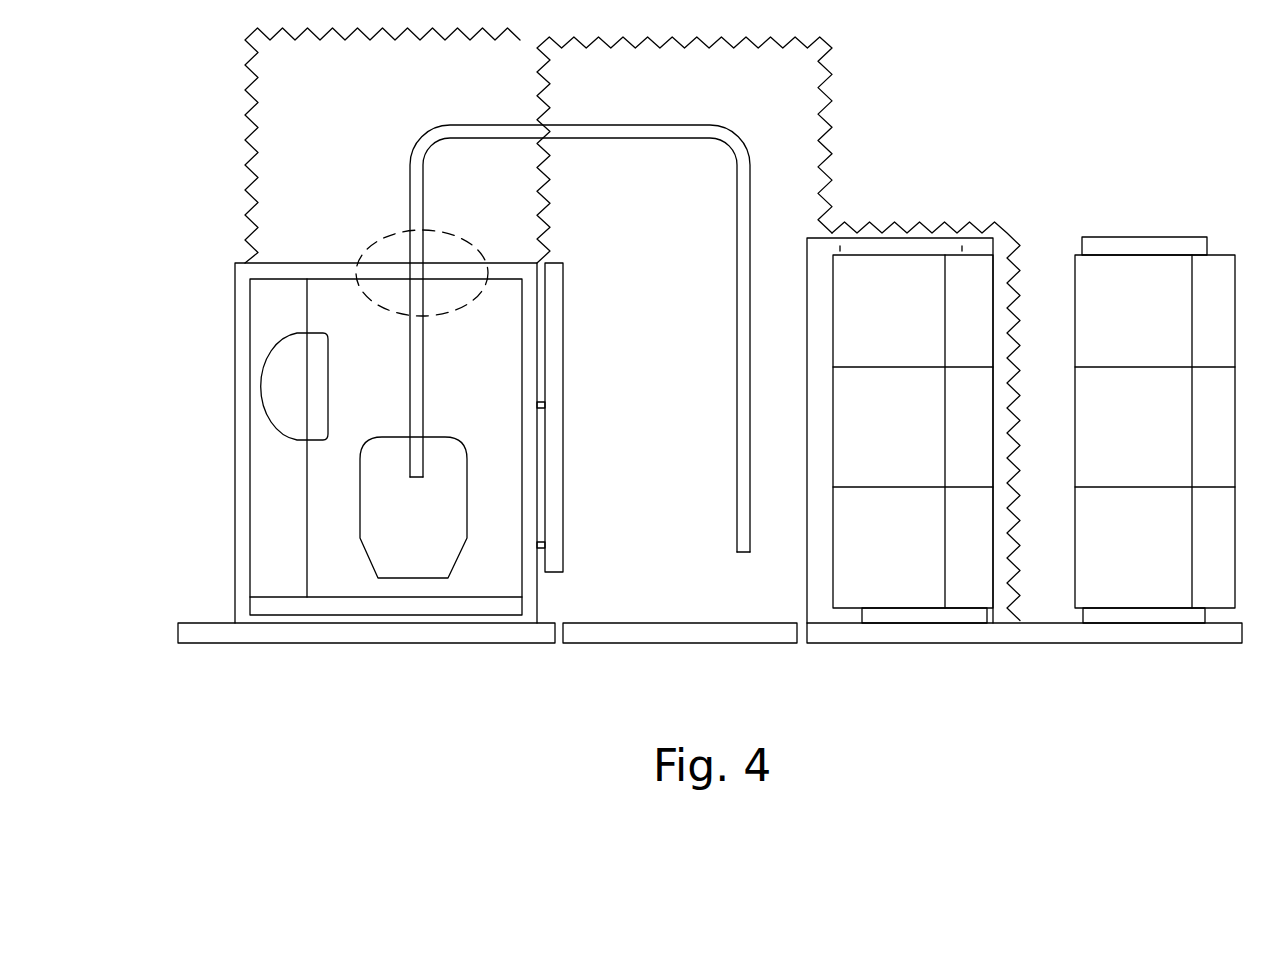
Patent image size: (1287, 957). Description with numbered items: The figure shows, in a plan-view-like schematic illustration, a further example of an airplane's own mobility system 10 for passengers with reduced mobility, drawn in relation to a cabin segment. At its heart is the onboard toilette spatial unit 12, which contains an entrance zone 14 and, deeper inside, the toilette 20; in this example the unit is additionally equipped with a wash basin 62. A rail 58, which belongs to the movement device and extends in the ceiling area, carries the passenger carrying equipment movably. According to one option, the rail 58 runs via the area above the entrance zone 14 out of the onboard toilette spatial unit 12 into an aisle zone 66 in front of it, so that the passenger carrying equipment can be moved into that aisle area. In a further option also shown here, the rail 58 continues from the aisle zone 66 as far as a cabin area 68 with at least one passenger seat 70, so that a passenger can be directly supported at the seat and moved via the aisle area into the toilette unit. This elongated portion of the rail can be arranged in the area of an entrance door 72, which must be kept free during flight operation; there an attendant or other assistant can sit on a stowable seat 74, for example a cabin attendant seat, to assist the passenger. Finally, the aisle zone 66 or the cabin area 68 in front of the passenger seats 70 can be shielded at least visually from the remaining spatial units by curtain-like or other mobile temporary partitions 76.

The mobility system 10 is at (184, 238).
The onboard toilette spatial unit 12 is at (240, 313).
The entrance zone 14 is at (440, 232).
The toilette 20 is at (385, 497).
The rail 58 is at (417, 343).
The wash basin 62 is at (287, 383).
The aisle zone 66 is at (324, 145).
The cabin area 68 is at (663, 437).
The passenger seat 70 is at (893, 270).
The entrance door 72 is at (670, 634).
The stowable seat 74 is at (552, 300).
The mobile temporary partitions 76 is at (247, 77).